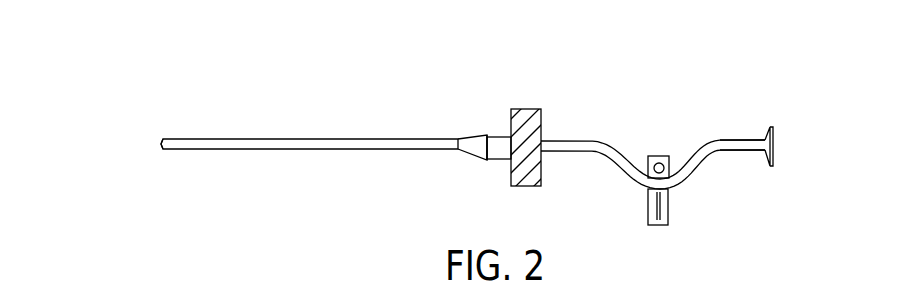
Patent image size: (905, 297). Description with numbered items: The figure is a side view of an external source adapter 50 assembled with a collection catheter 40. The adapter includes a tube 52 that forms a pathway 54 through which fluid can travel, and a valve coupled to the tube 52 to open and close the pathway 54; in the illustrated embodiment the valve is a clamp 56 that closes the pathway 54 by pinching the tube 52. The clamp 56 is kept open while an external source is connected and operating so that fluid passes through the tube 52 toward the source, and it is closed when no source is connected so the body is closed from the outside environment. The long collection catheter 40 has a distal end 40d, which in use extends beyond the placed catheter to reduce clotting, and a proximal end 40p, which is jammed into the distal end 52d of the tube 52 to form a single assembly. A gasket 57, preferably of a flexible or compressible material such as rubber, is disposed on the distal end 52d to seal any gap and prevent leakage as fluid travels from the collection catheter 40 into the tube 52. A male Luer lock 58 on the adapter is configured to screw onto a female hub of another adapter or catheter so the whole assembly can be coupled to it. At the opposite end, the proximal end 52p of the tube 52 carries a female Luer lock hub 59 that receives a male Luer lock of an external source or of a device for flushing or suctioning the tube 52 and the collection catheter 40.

The collection catheter 40 is at (283, 137).
The distal end of the collection catheter 40d is at (182, 170).
The proximal end of the collection catheter 40p is at (479, 170).
The gasket 57 is at (488, 160).
The distal end of the tube 52d is at (499, 122).
The male Luer lock 58 is at (530, 108).
The pathway 54 is at (593, 139).
The tube 52 is at (690, 180).
The clamp 56 is at (659, 225).
The female Luer lock hub 59 is at (772, 125).
The proximal end of the tube 52p is at (767, 175).
The external source adapter 50 is at (745, 100).